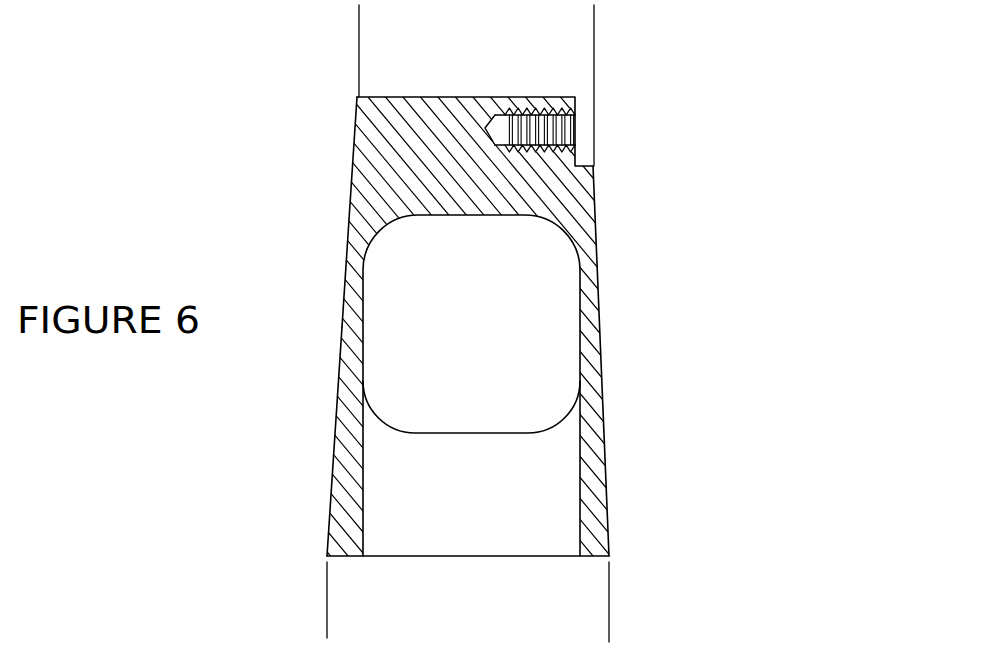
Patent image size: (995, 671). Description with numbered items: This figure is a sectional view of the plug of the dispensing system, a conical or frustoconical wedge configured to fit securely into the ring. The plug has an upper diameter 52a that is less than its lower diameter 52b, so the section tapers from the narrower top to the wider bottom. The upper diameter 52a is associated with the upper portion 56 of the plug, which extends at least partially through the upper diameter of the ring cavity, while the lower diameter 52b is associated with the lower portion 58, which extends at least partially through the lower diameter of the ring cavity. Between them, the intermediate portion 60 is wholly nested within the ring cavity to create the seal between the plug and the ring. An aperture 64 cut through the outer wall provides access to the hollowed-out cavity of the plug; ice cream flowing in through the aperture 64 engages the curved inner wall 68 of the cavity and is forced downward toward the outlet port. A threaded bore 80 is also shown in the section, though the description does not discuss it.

The upper diameter 52a is at (594, 22).
The lower diameter 52b is at (609, 623).
The upper portion 56 is at (352, 172).
The lower portion 58 is at (317, 463).
The intermediate portion 60 is at (602, 267).
The aperture 64 is at (502, 346).
The curved inner wall 68 is at (463, 500).
The threaded bore 80 is at (576, 128).